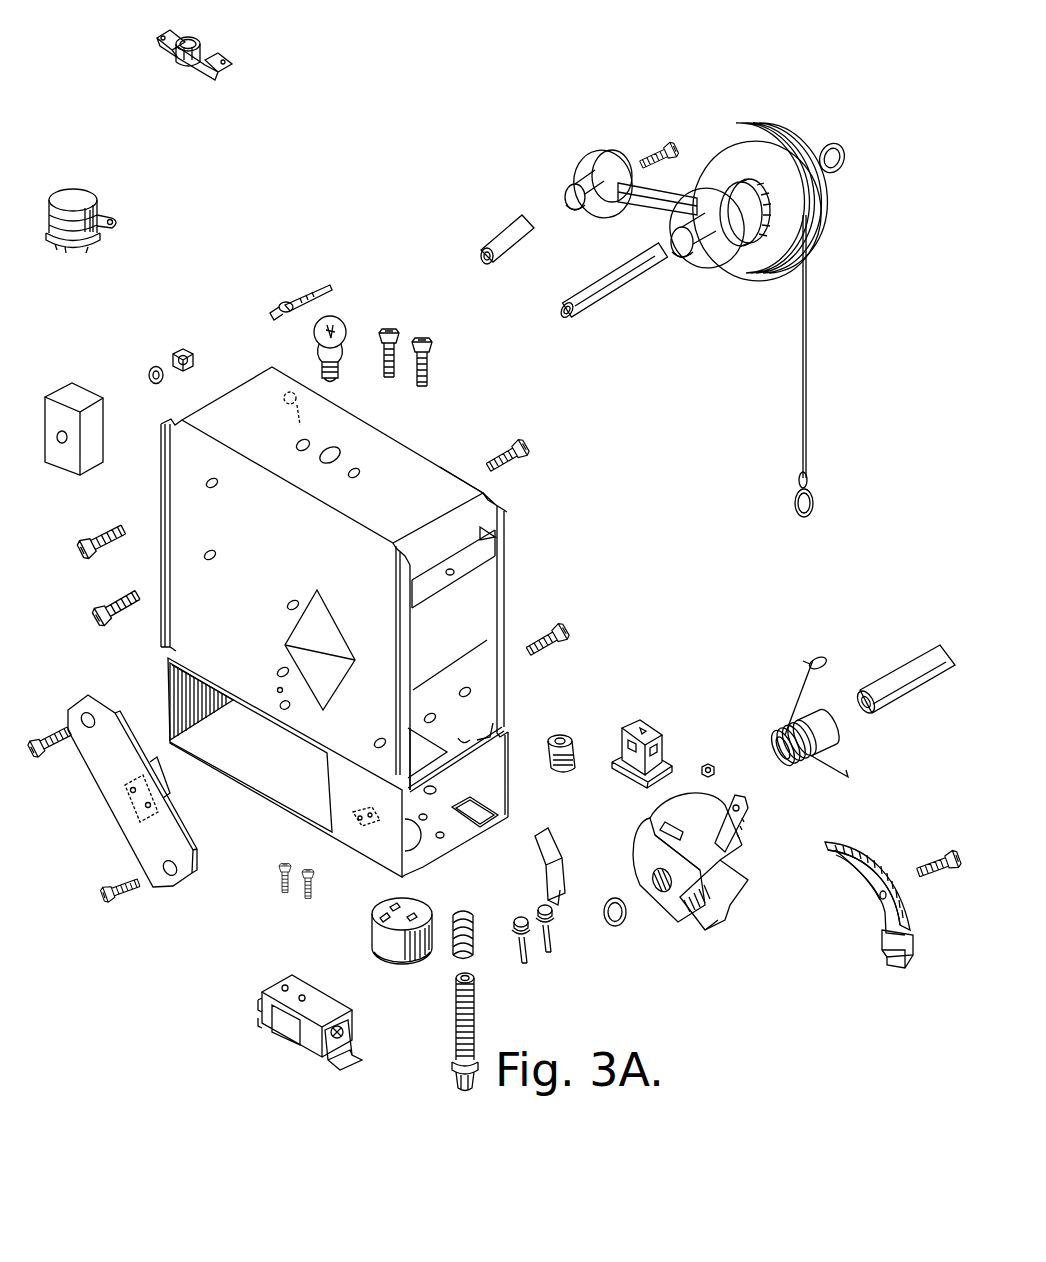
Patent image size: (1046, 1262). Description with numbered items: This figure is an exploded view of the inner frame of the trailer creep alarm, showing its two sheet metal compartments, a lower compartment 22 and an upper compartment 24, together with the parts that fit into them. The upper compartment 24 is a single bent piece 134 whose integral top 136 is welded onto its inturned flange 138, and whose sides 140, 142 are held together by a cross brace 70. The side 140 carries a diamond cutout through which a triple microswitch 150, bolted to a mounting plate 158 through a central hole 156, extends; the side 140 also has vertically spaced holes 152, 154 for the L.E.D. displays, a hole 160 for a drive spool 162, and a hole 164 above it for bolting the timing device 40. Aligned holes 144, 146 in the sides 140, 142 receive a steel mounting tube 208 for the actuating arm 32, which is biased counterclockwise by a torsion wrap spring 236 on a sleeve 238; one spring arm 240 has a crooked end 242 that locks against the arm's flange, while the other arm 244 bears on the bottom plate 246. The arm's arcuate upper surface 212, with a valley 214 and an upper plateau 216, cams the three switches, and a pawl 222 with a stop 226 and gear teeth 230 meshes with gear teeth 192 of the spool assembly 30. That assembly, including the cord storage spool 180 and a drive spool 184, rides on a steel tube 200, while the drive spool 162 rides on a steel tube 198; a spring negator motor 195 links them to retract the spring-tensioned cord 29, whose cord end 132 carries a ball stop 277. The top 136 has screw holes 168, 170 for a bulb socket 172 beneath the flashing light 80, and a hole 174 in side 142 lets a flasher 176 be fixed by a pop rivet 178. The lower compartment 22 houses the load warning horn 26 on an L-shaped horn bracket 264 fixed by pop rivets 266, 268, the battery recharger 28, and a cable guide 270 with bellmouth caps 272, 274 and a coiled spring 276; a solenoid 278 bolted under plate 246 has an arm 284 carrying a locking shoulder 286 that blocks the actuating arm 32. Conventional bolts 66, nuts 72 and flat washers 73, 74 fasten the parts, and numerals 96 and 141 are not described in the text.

The lower compartment 22 is at (492, 776).
The upper compartment 24 is at (478, 592).
The load warning horn 26 is at (378, 930).
The battery recharger 28 is at (652, 728).
The spring-tensioned cord 29 is at (808, 345).
The spool assembly 30 is at (758, 122).
The actuating arm 32 is at (730, 895).
The timing device 40 is at (62, 385).
The bolts 66 is at (105, 535).
The cross brace 70 is at (448, 562).
The nuts 72 is at (183, 349).
The flat washer 73 is at (157, 384).
The flat washer 74 is at (836, 143).
The flashing light 80 is at (336, 320).
The drum edge 96 is at (710, 928).
The cord end 132 is at (816, 505).
The single bent piece 134 is at (432, 440).
The top 136 is at (418, 497).
The inturned flange 138 is at (505, 498).
The side 140 is at (282, 555).
The diamond tab 141 is at (332, 615).
The side 142 is at (510, 684).
The hole 144 is at (374, 742).
The hole 146 is at (466, 686).
The triple microswitch 150 is at (165, 792).
The hole 152 is at (278, 670).
The hole 154 is at (280, 702).
The central hole 156 is at (293, 600).
The mounting plate 158 is at (145, 838).
The hole 160 is at (212, 560).
The drive spool 162 is at (580, 170).
The hole 164 is at (217, 488).
The screw hole 168 is at (304, 450).
The screw hole 170 is at (355, 478).
The bulb socket 172 is at (200, 42).
The hole 174 is at (300, 425).
The flasher 176 is at (80, 190).
The pop rivet 178 is at (297, 295).
The cord storage spool 180 is at (770, 270).
The drive spool 184 is at (705, 262).
The gear teeth 192 is at (738, 192).
The spring negator motor 195 is at (650, 200).
The steel tube 198 is at (605, 295).
The steel tube 200 is at (495, 228).
The steel mounting tube 208 is at (930, 690).
The arcuate upper surface 212 is at (688, 815).
The valley 214 is at (650, 825).
The upper plateau 216 is at (728, 855).
The pawl 222 is at (860, 870).
The stop 226 is at (895, 970).
The gear teeth 230 is at (865, 848).
The torsion wrap spring 236 is at (795, 687).
The sleeve 238 is at (820, 738).
The arm 240 is at (797, 712).
The crooked end 242 is at (823, 667).
The arm 244 is at (828, 770).
The bottom plate 246 is at (420, 703).
The horn bracket 264 is at (566, 870).
The pop rivet 266 is at (528, 960).
The pop rivet 268 is at (552, 945).
The cable guide 270 is at (456, 1012).
The bellmouth cap 272 is at (560, 735).
The bellmouth cap 274 is at (465, 1092).
The coiled spring 276 is at (468, 908).
The ball stop 277 is at (812, 480).
The solenoid 278 is at (265, 1042).
The arm 284 is at (345, 1030).
The locking shoulder 286 is at (345, 1070).